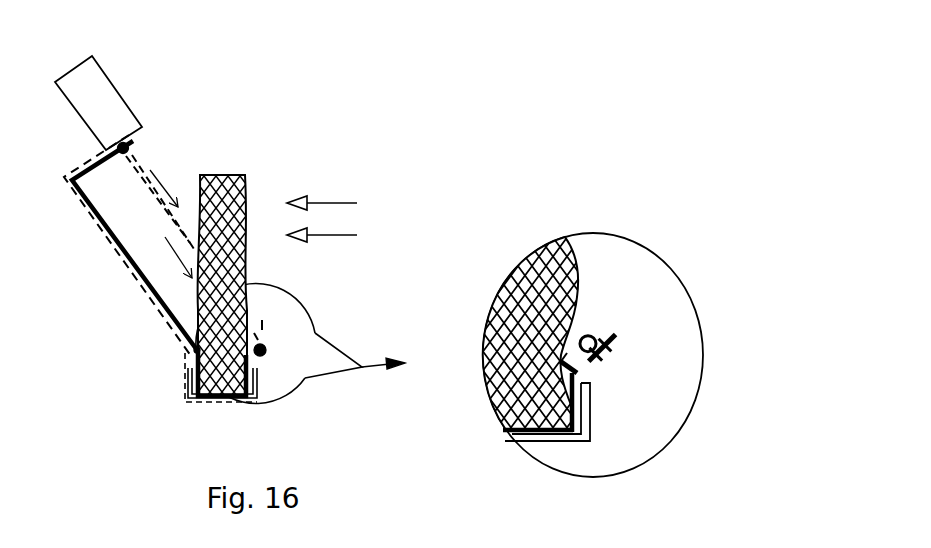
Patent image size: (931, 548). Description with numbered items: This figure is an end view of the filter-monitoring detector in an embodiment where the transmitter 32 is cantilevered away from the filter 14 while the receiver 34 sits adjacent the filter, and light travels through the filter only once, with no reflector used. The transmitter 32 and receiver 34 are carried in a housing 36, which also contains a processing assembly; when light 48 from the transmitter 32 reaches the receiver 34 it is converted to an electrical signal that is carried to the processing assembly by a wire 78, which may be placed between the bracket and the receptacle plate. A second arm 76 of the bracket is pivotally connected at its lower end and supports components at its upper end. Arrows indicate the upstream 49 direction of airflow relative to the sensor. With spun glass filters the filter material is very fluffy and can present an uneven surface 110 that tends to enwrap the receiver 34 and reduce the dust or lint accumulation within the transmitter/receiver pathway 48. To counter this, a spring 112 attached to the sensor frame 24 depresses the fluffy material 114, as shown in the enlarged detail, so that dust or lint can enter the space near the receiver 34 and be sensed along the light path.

The filter 14 is at (245, 172).
The sensor frame 24 is at (195, 402).
The transmitter 32 is at (137, 145).
The receiver 34 is at (263, 334).
The housing 36 is at (103, 70).
The light 48 is at (262, 320).
The upstream 49 is at (322, 219).
The second arm 76 is at (147, 289).
The wire 78 is at (102, 247).
The uneven surface 110 is at (253, 205).
The spring 112 is at (187, 348).
The fluffy material 114 is at (254, 333).